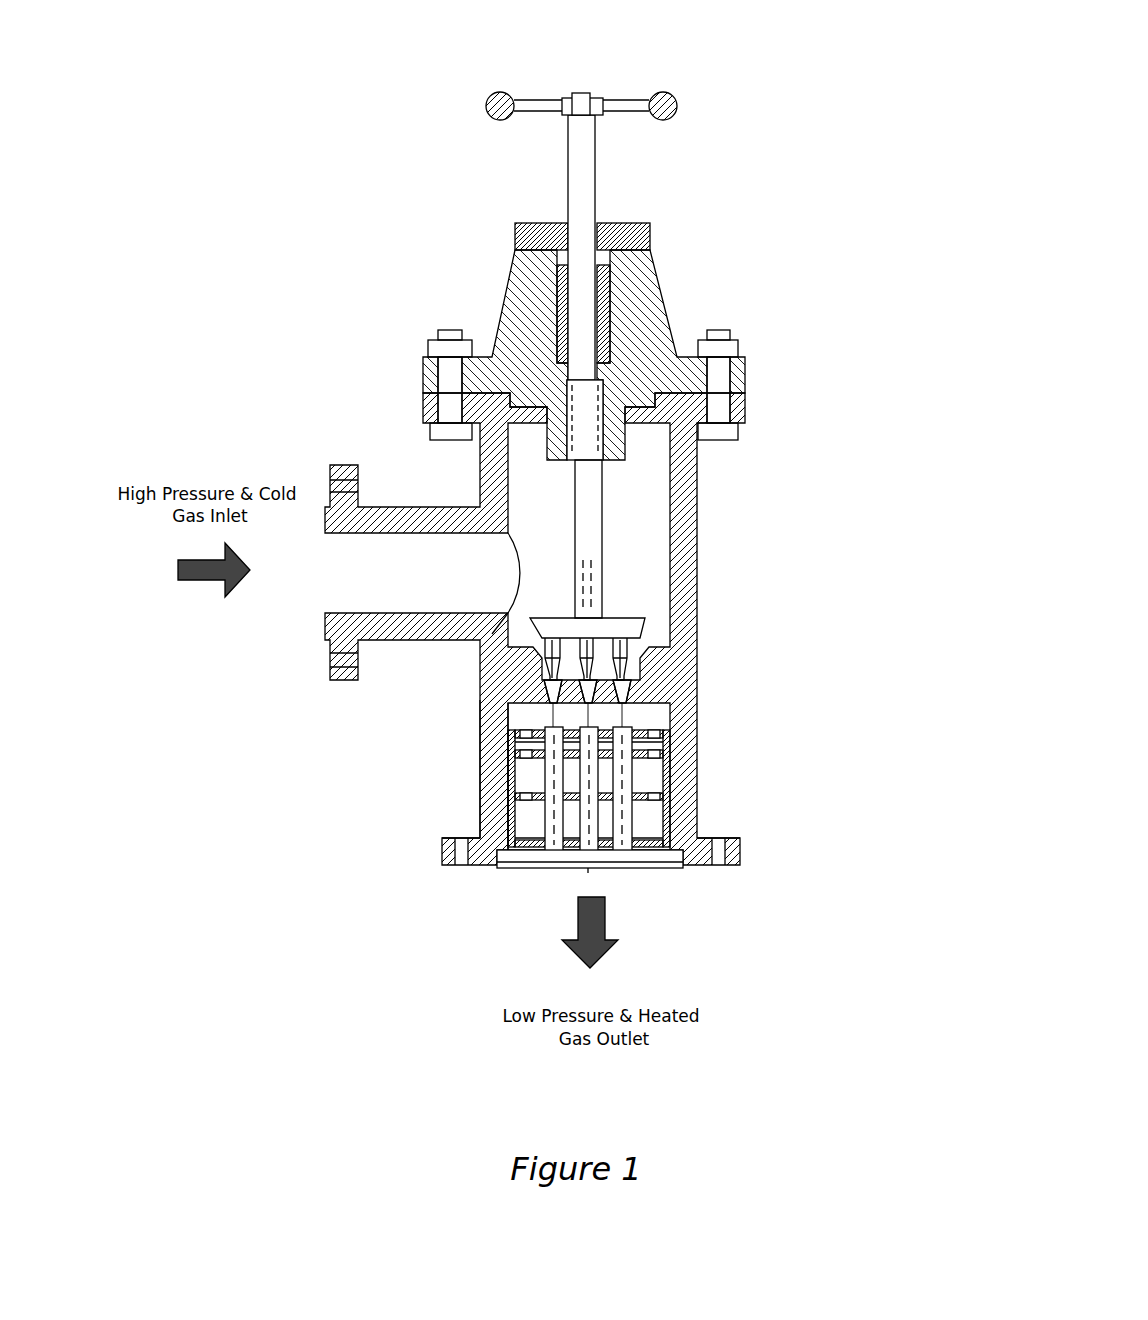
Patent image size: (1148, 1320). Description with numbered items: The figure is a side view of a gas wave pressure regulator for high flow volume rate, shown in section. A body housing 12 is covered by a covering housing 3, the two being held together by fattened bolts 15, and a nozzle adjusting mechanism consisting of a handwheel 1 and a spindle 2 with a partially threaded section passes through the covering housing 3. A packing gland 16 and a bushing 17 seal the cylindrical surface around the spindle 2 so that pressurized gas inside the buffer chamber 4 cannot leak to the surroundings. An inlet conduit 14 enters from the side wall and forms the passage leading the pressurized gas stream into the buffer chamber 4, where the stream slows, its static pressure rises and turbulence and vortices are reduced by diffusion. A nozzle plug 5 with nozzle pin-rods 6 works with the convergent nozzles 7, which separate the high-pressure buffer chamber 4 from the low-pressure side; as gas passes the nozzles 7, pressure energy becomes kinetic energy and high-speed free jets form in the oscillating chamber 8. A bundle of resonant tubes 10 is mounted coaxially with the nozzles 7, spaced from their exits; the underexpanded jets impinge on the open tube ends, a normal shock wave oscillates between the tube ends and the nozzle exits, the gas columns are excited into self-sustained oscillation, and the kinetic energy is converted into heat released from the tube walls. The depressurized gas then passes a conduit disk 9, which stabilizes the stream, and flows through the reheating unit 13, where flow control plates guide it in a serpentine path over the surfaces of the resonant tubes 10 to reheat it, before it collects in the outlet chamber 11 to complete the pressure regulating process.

The handwheel 1 is at (670, 92).
The spindle 2 is at (583, 210).
The covering housing 3 is at (642, 320).
The buffer chamber 4 is at (667, 473).
The nozzle plug 5 is at (605, 620).
The nozzle pin-rods 6 is at (612, 667).
The nozzle 7 is at (648, 682).
The oscillating chamber 8 is at (640, 720).
The conduit disk 9 is at (622, 727).
The resonant tubes 10 is at (683, 866).
The outlet chamber 11 is at (540, 856).
The body housing 12 is at (492, 752).
The reheating unit 13 is at (512, 750).
The inlet conduit 14 is at (421, 365).
The fattened bolts 15 is at (440, 330).
The packing gland 16 is at (553, 320).
The bushing 17 is at (517, 232).